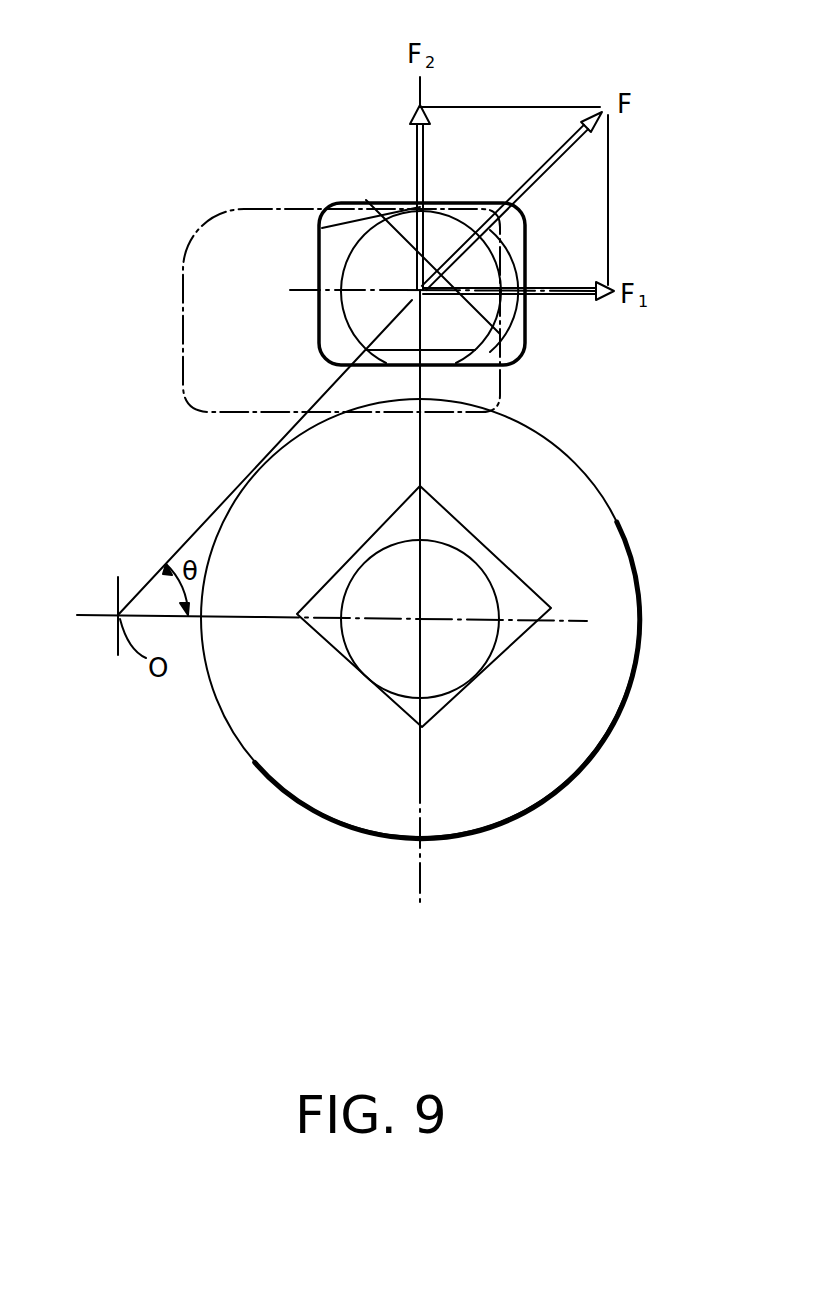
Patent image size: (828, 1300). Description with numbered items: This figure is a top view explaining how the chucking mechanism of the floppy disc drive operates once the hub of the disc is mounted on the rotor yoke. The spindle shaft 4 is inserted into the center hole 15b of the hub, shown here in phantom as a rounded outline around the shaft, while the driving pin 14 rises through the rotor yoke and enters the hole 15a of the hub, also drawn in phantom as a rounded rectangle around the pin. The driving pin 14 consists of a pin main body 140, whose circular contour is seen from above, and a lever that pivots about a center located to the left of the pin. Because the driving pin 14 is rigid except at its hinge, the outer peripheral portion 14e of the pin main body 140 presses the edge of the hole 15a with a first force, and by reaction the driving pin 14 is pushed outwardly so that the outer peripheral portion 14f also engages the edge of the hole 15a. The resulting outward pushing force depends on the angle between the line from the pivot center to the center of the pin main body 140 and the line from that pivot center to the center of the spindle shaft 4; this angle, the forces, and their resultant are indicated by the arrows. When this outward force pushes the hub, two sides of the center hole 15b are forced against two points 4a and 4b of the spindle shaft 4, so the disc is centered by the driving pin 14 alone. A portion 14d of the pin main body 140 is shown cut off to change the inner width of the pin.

The spindle shaft 4 is at (363, 645).
The point of the spindle shaft 4a is at (467, 684).
The point of the spindle shaft 4b is at (382, 693).
The driving pin 14 is at (363, 257).
The cut-off portion of the pin main body 14d is at (437, 351).
The outer peripheral portion 14e is at (513, 302).
The outer peripheral portion 14f is at (420, 206).
The pin main body 140 is at (388, 250).
The hole of the hub 15a is at (242, 210).
The center hole of the hub 15b is at (533, 587).